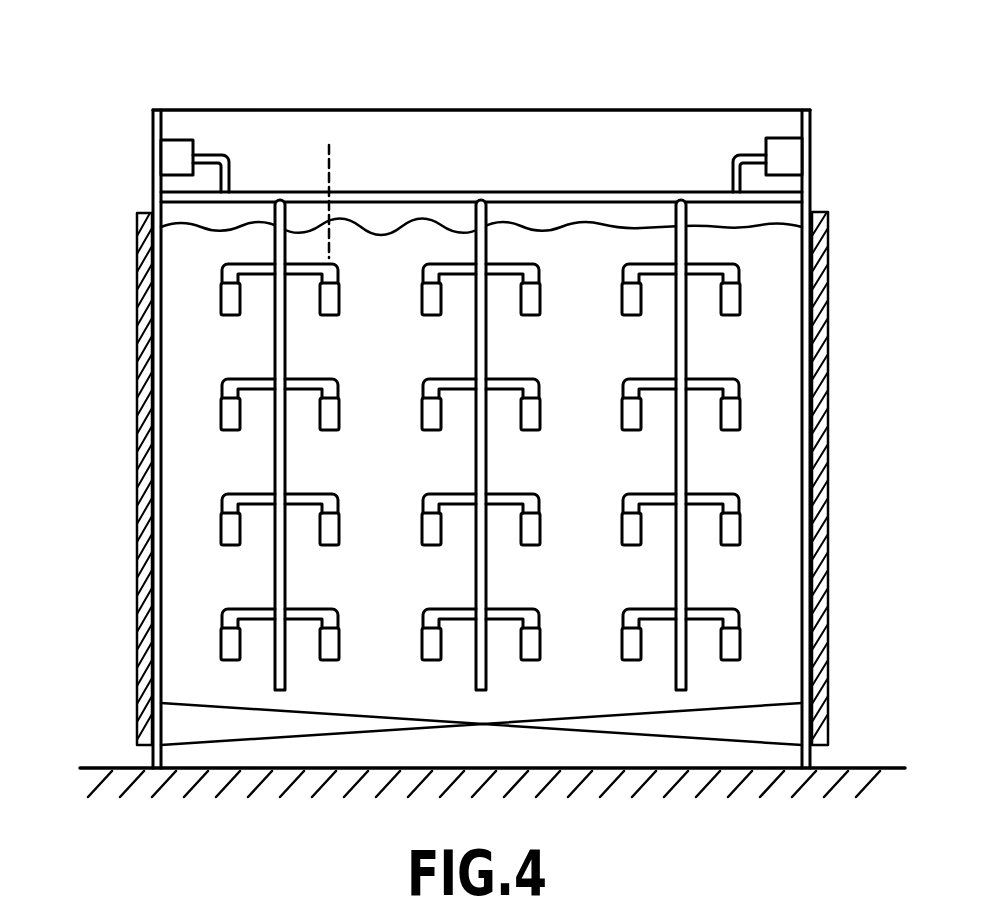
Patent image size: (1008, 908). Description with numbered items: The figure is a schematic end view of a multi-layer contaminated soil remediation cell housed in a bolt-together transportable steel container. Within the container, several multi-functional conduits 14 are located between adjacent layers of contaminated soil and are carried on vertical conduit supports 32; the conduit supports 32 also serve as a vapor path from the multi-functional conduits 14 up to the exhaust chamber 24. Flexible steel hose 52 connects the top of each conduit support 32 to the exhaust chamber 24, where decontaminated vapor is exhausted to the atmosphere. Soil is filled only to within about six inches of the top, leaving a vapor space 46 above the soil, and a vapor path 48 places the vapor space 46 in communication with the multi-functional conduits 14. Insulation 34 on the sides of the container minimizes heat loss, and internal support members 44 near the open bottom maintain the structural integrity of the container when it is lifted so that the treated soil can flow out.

The multi-functional conduit 14 is at (620, 308).
The exhaust chamber 24 is at (174, 140).
The conduit support 32 is at (578, 190).
The insulation 34 is at (136, 410).
The internal support member 44 is at (588, 715).
The vapor space 46 is at (480, 150).
The vapor path 48 is at (332, 160).
The flexible steel hose 52 is at (229, 162).